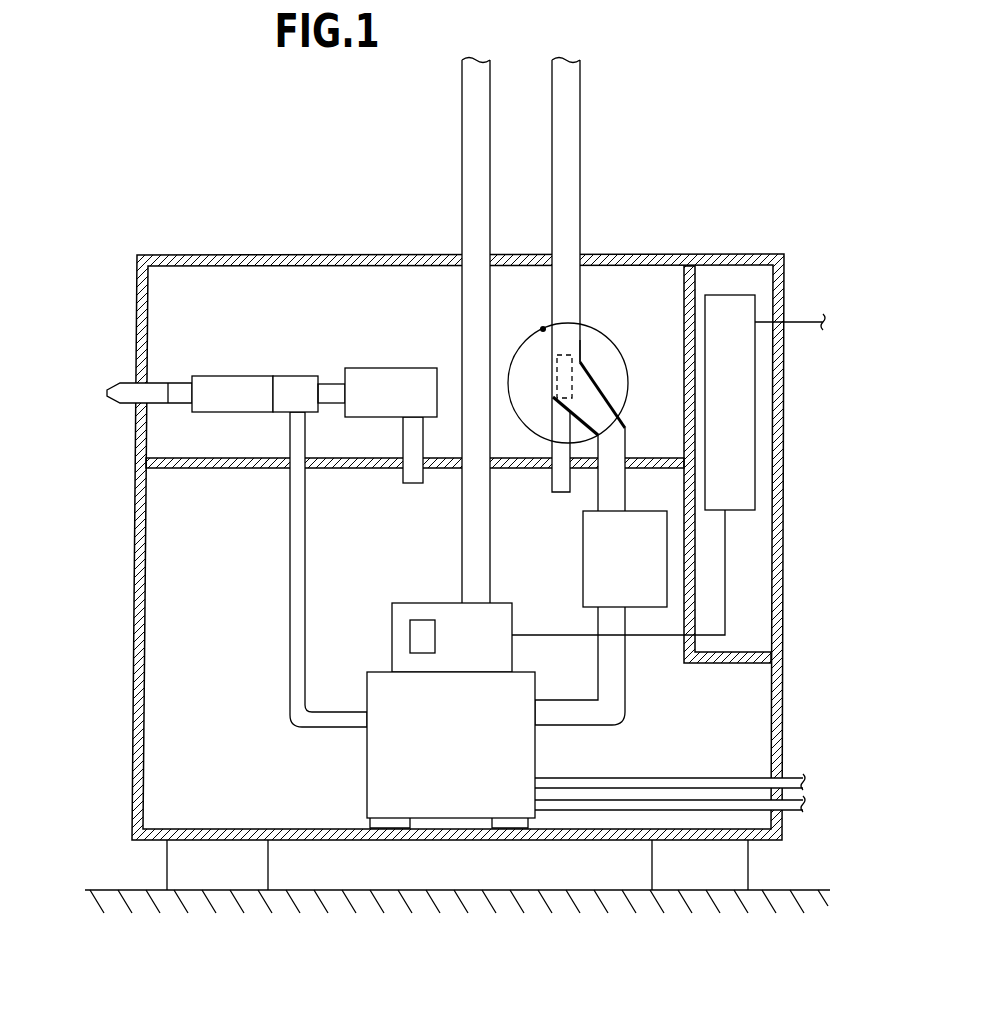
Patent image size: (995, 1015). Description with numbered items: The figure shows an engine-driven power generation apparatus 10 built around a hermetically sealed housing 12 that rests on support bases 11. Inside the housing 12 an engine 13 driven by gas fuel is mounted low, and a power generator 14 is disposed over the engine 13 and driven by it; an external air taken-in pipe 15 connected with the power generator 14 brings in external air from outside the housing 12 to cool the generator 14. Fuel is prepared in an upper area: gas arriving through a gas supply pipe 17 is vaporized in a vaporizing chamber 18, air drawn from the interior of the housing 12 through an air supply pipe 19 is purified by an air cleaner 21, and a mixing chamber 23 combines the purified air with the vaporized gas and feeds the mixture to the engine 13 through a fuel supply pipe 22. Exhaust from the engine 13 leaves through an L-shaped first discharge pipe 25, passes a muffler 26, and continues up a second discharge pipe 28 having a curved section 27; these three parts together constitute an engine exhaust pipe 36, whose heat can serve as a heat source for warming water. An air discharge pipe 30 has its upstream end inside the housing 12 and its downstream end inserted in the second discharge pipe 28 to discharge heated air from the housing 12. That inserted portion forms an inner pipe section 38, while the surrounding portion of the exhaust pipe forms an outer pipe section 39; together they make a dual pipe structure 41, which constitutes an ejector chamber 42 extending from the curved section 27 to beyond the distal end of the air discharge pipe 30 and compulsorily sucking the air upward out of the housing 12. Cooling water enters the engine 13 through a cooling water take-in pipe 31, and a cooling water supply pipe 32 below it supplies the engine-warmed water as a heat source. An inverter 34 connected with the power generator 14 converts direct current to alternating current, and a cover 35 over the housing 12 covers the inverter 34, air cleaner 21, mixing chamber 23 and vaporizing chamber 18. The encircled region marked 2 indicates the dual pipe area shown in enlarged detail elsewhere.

The region shown in FIG. 2 is at (543, 329).
The engine-driven power generation apparatus 10 is at (443, 522).
The support bases 11 is at (167, 862).
The hermetically sealed housing 12 is at (132, 688).
The engine 13 is at (367, 772).
The power generator 14 is at (392, 637).
The external air taken-in pipe 15 is at (462, 542).
The gas supply pipe 17 is at (160, 383).
The vaporizing chamber 18 is at (232, 376).
The air supply pipe 19 is at (402, 437).
The air cleaner 21 is at (392, 368).
The fuel supply pipe 22 is at (290, 597).
The mixing chamber 23 is at (295, 376).
The first discharge pipe 25 is at (628, 702).
The muffler 26 is at (583, 562).
The curved section 27 is at (612, 398).
The second discharge pipe 28 is at (580, 218).
The air discharge pipe 30 is at (557, 430).
The cooling water take-in pipe 31 is at (598, 778).
The cooling water supply pipe 32 is at (587, 810).
The inverter 34 is at (755, 428).
The cover 35 is at (740, 254).
The engine exhaust pipe 36 is at (578, 505).
The inner pipe section 38 is at (558, 367).
The outer pipe section 39 is at (580, 360).
The dual pipe structure 41 is at (546, 382).
The ejector chamber 42 is at (596, 372).